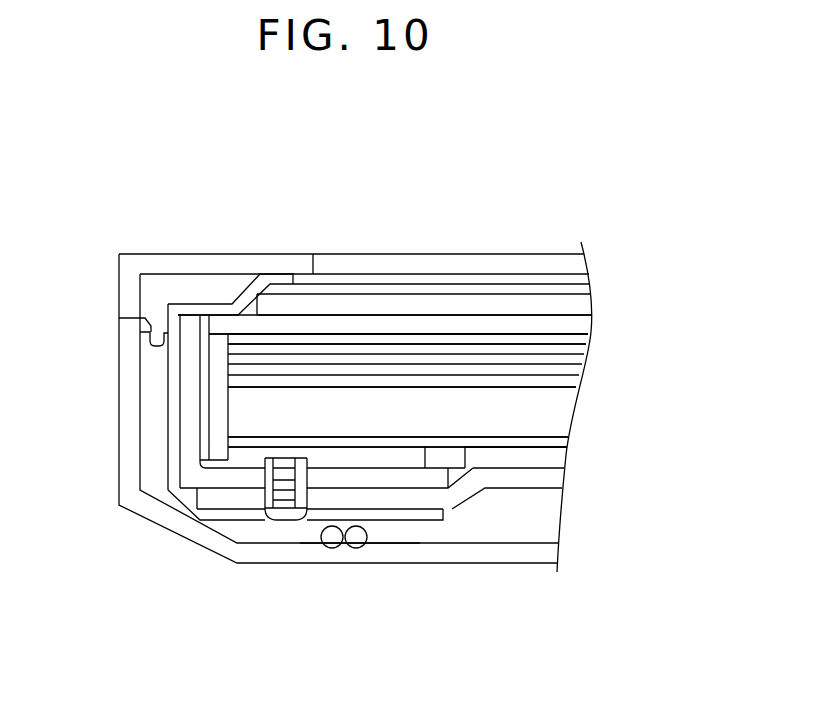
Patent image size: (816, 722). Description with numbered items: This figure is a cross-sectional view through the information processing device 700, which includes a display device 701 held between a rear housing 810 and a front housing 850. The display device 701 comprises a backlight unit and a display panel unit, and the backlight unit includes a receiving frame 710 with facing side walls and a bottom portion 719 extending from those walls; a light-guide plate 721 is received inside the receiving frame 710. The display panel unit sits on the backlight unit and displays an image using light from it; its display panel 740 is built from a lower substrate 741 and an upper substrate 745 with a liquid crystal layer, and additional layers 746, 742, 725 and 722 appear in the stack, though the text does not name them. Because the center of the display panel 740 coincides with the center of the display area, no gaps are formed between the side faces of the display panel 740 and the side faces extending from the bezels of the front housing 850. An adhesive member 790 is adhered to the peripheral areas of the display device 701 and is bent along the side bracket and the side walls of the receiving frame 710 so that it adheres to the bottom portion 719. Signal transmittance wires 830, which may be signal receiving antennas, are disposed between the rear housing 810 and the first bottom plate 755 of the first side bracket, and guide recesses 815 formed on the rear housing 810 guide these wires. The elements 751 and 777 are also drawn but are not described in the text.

The information processing device 700 is at (350, 109).
The display device 701 is at (488, 451).
The receiving frame 710 is at (215, 430).
The bottom portion 719 is at (571, 459).
The light-guide plate 721 is at (560, 413).
The lower polarizer 722 is at (427, 442).
The display panel 725 is at (590, 348).
The display panel 740 is at (400, 253).
The lower substrate 741 is at (468, 325).
The second optical sheet 742 is at (330, 202).
The upper substrate 745 is at (413, 307).
The fourth optical sheet 746 is at (353, 288).
The cushion member 751 is at (185, 365).
The first bottom plate 755 is at (246, 480).
The screw 777 is at (285, 505).
The adhesive member 790 is at (269, 274).
The rear housing 810 is at (125, 396).
The guide recesses 815 is at (360, 546).
The signal transmittance wires 830 is at (330, 548).
The front housing 850 is at (191, 264).